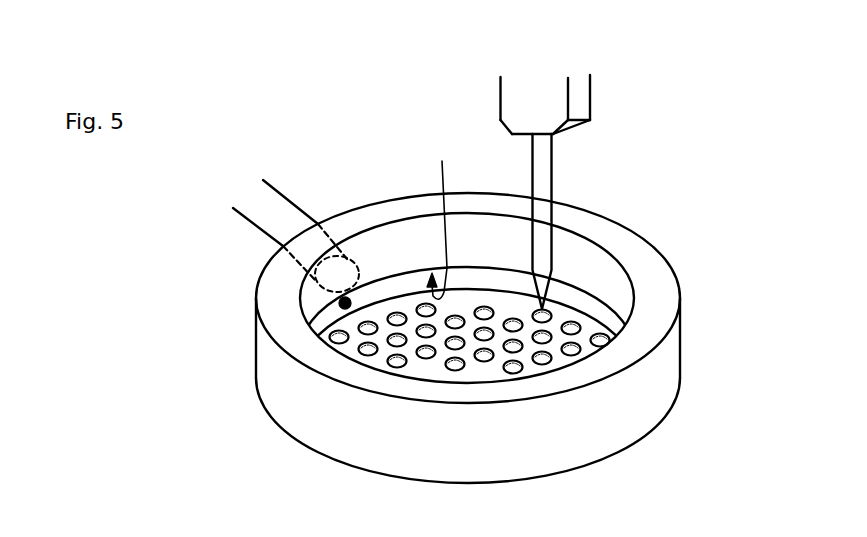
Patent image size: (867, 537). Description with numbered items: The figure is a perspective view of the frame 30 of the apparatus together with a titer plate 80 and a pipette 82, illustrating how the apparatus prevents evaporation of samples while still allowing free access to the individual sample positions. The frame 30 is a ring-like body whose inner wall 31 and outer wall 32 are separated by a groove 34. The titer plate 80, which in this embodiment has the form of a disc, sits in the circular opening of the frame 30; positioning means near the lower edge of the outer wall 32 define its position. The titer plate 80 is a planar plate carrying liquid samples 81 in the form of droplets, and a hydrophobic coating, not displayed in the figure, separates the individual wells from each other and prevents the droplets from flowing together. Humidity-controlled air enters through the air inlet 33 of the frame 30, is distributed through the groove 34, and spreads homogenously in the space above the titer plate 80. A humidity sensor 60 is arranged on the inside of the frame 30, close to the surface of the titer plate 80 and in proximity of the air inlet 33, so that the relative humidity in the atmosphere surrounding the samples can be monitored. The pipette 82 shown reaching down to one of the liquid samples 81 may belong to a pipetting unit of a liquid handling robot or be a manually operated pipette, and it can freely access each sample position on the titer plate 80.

The frame 30 is at (266, 348).
The inner wall 31 is at (505, 248).
The outer wall 32 is at (487, 278).
The air inlet 33 is at (338, 197).
The groove 34 is at (437, 220).
The humidity sensor 60 is at (345, 303).
The titer plate 80 is at (470, 338).
The liquid samples 81 is at (492, 363).
The pipette 82 is at (552, 182).